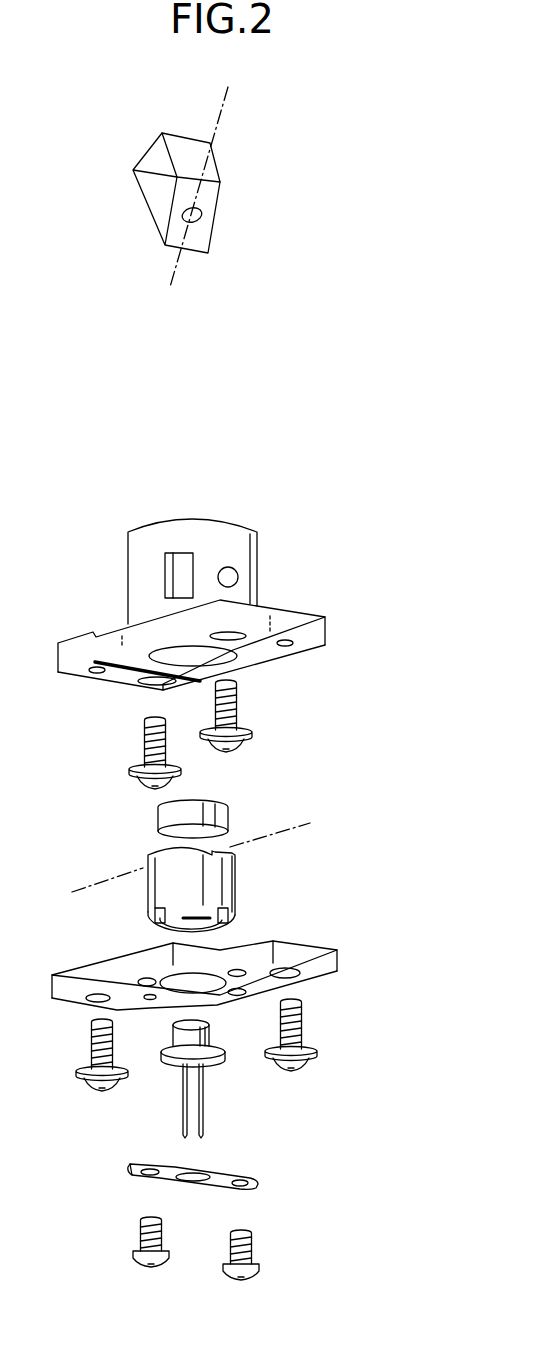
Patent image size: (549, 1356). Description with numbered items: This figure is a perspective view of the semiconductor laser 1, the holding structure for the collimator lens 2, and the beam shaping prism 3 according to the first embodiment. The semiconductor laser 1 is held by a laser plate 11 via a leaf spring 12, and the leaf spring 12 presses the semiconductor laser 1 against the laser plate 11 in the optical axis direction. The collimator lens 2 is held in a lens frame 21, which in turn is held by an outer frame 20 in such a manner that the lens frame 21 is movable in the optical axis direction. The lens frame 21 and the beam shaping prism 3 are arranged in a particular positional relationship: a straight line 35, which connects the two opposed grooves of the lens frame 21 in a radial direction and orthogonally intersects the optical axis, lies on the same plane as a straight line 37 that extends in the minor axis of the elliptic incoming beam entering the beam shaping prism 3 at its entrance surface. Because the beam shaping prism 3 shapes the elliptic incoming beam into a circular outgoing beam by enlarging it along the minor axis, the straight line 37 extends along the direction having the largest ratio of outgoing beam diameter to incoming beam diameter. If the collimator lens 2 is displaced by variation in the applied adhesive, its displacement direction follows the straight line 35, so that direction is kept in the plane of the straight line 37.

The straight line 37 is at (223, 110).
The beam shaping prism 3 is at (215, 205).
The outer frame 20 is at (253, 556).
The collimator lens 2 is at (228, 815).
The straight line 35 is at (295, 827).
The lens frame 21 is at (233, 887).
The laser plate 11 is at (323, 958).
The semiconductor laser 1 is at (222, 1052).
The leaf spring 12 is at (227, 1173).